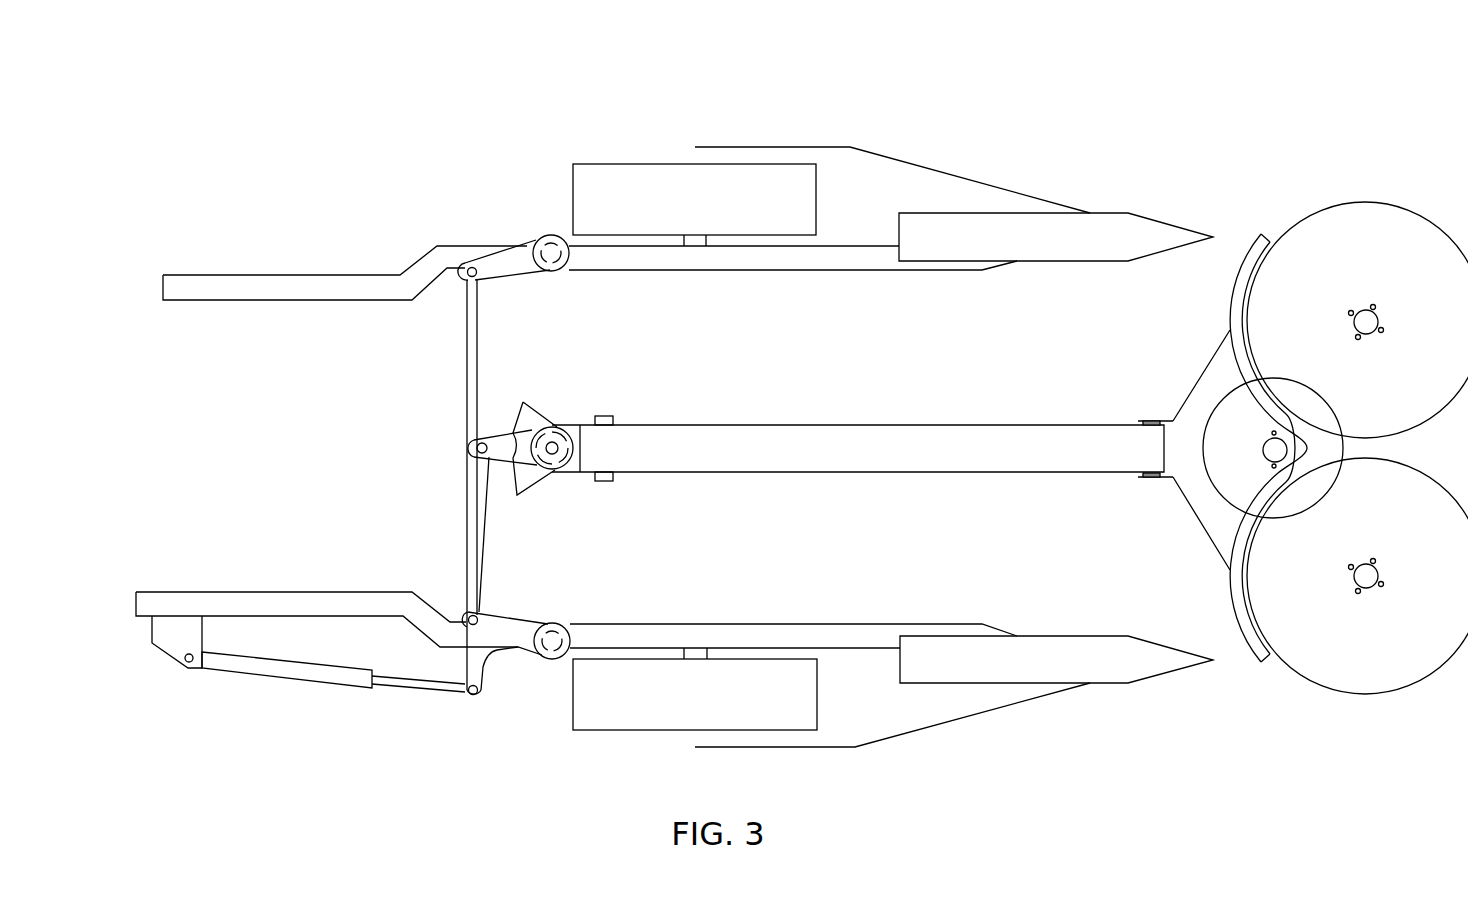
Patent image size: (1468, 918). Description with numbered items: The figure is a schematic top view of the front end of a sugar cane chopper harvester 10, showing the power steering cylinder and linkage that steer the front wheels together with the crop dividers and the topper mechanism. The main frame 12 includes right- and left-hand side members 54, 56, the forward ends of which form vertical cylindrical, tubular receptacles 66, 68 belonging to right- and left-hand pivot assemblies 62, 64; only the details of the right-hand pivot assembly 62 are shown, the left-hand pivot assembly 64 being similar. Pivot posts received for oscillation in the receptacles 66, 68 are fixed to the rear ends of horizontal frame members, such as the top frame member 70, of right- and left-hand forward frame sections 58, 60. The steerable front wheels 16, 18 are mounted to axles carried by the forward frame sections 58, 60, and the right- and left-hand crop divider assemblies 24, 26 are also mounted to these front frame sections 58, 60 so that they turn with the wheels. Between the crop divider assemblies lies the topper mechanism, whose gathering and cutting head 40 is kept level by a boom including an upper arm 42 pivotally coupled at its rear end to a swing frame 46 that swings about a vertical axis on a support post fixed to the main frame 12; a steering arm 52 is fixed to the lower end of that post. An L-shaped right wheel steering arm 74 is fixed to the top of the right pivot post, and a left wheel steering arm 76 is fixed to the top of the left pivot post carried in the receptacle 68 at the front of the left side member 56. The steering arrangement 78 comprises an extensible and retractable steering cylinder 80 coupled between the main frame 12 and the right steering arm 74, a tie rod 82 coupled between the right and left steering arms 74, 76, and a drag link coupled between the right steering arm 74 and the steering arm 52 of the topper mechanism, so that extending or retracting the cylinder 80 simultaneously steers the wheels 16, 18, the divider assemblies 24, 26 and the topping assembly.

The sugar cane chopper harvester 10 is at (425, 168).
The main frame 12 is at (235, 302).
The front wheel 16 is at (663, 705).
The front wheel 18 is at (668, 212).
The right-hand crop divider assembly 24 is at (1105, 690).
The left-hand crop divider assembly 26 is at (1172, 226).
The gathering and cutting head 40 is at (1163, 553).
The upper arm 42 is at (852, 473).
The swing frame 46 is at (556, 477).
The steering arm 52 is at (514, 432).
The right-hand side member 54 is at (357, 592).
The left-hand side member 56 is at (311, 301).
The right-hand forward frame section 58 is at (735, 622).
The left-hand forward frame section 60 is at (717, 275).
The right-hand pivot assembly 62 is at (553, 622).
The left-hand pivot assembly 64 is at (556, 272).
The tubular receptacle 66 is at (548, 660).
The tubular receptacle 68 is at (547, 233).
The top horizontal frame member 70 is at (635, 272).
The right wheel steering arm 74 is at (487, 678).
The left wheel steering arm 76 is at (497, 282).
The steering arrangement 78 is at (440, 477).
The steering cylinder 80 is at (307, 688).
The tie rod 82 is at (467, 382).